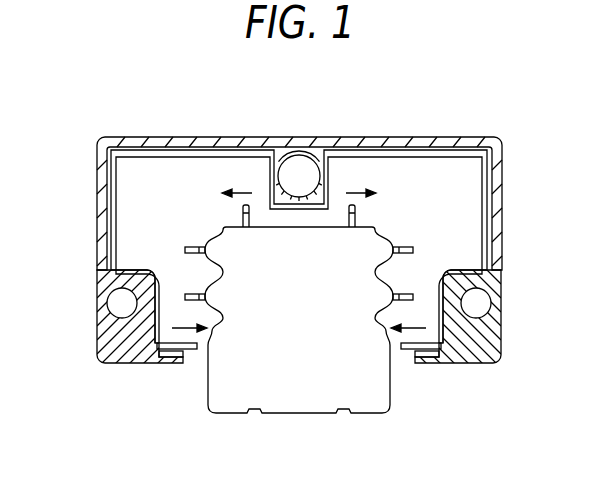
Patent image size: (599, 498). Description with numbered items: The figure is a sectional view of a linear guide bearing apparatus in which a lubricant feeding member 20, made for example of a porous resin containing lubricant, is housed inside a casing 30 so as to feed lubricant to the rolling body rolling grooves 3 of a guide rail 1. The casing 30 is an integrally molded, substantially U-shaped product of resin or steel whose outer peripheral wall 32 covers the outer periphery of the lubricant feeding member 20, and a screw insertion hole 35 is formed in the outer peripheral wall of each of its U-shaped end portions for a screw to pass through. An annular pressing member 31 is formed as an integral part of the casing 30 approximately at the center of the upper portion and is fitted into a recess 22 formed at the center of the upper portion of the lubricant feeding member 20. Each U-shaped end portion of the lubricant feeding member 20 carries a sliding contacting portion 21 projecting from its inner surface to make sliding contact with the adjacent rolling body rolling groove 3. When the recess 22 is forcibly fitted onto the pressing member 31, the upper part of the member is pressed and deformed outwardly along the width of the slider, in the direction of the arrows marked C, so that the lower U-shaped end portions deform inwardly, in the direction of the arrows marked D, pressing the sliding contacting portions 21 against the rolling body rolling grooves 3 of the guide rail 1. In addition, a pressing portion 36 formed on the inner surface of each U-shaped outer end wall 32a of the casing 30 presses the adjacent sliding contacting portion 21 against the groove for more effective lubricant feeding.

The guide rail 1 is at (304, 395).
The rolling body rolling groove 3 is at (215, 333).
The lubricant feeding member 20 is at (153, 183).
The sliding contacting portion 21 is at (212, 275).
The recess 22 is at (291, 166).
The casing 30 is at (332, 167).
The pressing member 31 is at (322, 182).
The outer peripheral wall 32 is at (501, 188).
The U-shaped outer end wall 32a is at (488, 337).
The screw insertion hole 35 is at (124, 304).
The pressing portion 36 is at (450, 335).